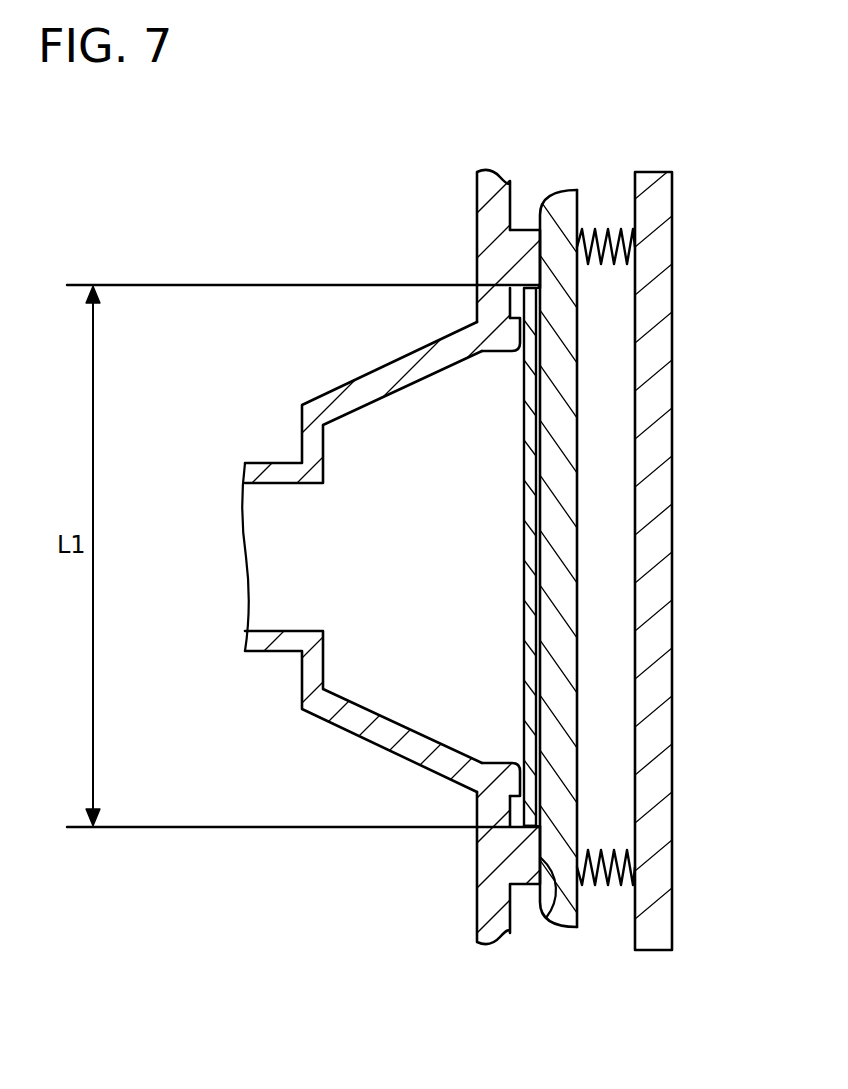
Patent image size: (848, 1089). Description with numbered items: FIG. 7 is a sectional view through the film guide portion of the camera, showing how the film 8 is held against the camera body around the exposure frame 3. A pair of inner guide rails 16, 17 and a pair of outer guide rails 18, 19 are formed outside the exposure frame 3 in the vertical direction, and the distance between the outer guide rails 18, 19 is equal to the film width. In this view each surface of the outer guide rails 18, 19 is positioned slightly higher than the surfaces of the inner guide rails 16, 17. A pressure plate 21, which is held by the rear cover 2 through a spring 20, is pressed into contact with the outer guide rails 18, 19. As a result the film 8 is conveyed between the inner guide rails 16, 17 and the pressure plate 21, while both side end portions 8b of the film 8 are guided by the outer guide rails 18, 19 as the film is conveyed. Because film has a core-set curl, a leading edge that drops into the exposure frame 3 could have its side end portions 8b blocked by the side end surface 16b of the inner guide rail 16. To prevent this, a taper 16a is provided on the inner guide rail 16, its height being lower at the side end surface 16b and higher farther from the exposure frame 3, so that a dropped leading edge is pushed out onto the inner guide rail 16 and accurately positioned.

The rear cover 2 is at (657, 335).
The exposure frame 3 is at (342, 714).
The film 8 is at (524, 537).
The side end portion of the film 8b is at (522, 287).
The inner guide rail 16 is at (520, 328).
The taper 16a is at (520, 347).
The side end surface of the inner guide rail 16b is at (503, 352).
The inner guide rail 17 is at (523, 781).
The outer guide rail 18 is at (541, 246).
The outer guide rail 19 is at (555, 897).
The spring 20 is at (607, 232).
The pressure plate 21 is at (578, 640).